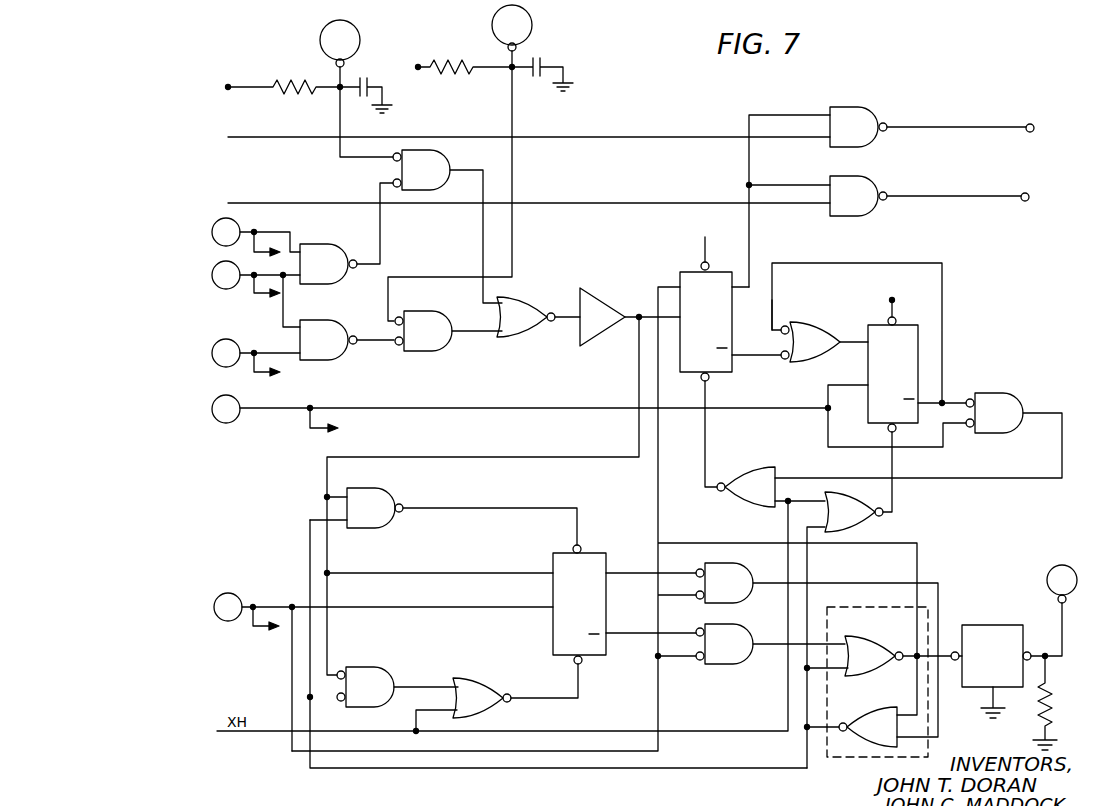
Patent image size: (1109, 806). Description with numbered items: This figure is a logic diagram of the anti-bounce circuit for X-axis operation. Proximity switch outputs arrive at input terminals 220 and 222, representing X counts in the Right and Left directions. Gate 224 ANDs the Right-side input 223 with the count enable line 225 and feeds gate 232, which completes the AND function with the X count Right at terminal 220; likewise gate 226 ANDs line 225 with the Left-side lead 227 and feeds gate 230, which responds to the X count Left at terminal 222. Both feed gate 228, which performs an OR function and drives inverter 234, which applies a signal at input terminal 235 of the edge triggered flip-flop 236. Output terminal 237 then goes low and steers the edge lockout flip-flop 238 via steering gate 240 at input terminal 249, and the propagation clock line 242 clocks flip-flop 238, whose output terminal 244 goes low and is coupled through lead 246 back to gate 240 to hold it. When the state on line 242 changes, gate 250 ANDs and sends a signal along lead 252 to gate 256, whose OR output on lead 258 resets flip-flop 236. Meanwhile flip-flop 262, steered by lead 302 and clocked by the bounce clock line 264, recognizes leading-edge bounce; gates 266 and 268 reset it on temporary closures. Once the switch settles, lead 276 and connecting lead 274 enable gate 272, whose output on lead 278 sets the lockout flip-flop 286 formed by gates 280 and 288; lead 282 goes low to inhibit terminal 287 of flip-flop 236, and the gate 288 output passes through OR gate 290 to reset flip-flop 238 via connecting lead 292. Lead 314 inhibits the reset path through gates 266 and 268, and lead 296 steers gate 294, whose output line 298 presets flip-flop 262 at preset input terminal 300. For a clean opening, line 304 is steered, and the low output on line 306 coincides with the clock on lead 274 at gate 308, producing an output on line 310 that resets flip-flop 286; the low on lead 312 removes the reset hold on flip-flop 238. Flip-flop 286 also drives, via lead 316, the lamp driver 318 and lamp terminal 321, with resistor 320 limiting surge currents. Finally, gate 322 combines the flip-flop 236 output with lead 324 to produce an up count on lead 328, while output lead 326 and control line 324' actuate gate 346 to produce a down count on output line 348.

The input terminal 220 is at (324, 48).
The input terminal 222 is at (492, 27).
The input 223 is at (285, 230).
The gate 224 is at (328, 264).
The count enable line 225 is at (245, 279).
The gate 226 is at (347, 340).
The lead 227 is at (278, 352).
The gate 228 is at (538, 317).
The gate 230 is at (448, 331).
The gate 232 is at (429, 226).
The inverter 234 is at (630, 317).
The input terminal 235 is at (677, 325).
The edge triggered flip-flop 236 is at (740, 330).
The output terminal 237 is at (758, 357).
The edge lockout flip-flop 238 is at (920, 334).
The steering gate 240 is at (824, 342).
The propagation clock line 242 is at (290, 414).
The output terminal 244 is at (923, 403).
The lead 246 is at (874, 263).
The input terminal 249 is at (778, 320).
The gate 250 is at (994, 413).
The lead 252 is at (992, 480).
The gate 256 is at (771, 487).
The lead 258 is at (708, 433).
The flip-flop 262 is at (596, 551).
The bounce clock line 264 is at (268, 605).
The gate 266 is at (397, 687).
The gate 268 is at (515, 691).
The gate 272 is at (705, 644).
The connecting lead 274 is at (655, 715).
The lead 276 is at (636, 632).
The lead 278 is at (776, 648).
The gate 280 is at (874, 656).
The lead 282 is at (669, 382).
The flip-flop 286 is at (898, 607).
The input terminal 287 is at (679, 278).
The gate 288 is at (868, 727).
The OR gate 290 is at (854, 512).
The connecting lead 292 is at (895, 463).
The gate 294 is at (356, 508).
The lead 296 is at (310, 548).
The output line 298 is at (504, 507).
The preset input terminal 300 is at (574, 544).
The lead 302 is at (502, 452).
The line 304 is at (514, 569).
The line 306 is at (632, 568).
The gate 308 is at (724, 583).
The line 310 is at (777, 586).
The lead 312 is at (808, 566).
The lead 314 is at (742, 768).
The lead 316 is at (950, 650).
The lamp driver 318 is at (1010, 660).
The resistor 320 is at (1050, 700).
The lamp terminal 321 is at (1076, 567).
The gate 322 is at (858, 127).
The lead 324 is at (529, 142).
The control line 324' is at (529, 195).
The output lead 326 is at (752, 238).
The lead 328 is at (977, 127).
The gate 346 is at (858, 196).
The output line 348 is at (975, 198).